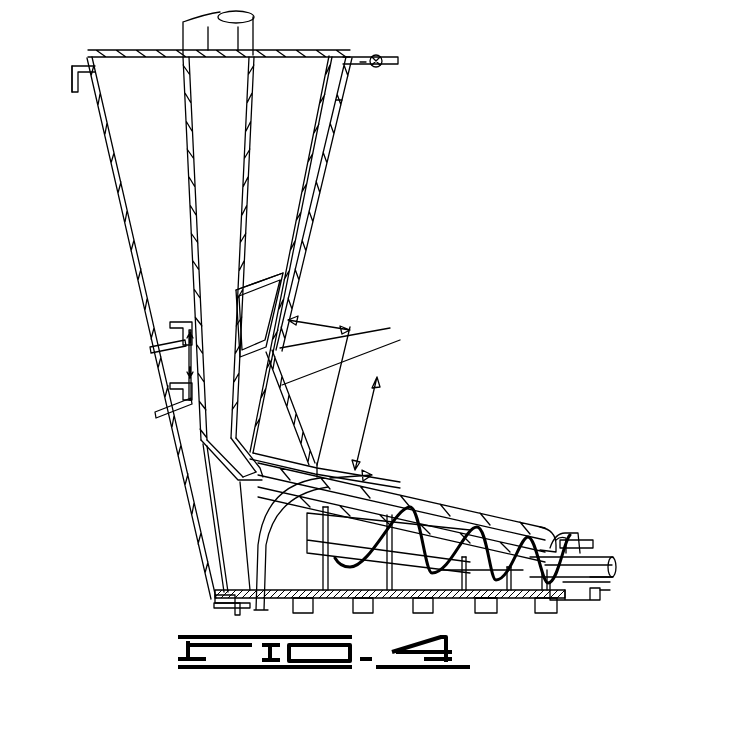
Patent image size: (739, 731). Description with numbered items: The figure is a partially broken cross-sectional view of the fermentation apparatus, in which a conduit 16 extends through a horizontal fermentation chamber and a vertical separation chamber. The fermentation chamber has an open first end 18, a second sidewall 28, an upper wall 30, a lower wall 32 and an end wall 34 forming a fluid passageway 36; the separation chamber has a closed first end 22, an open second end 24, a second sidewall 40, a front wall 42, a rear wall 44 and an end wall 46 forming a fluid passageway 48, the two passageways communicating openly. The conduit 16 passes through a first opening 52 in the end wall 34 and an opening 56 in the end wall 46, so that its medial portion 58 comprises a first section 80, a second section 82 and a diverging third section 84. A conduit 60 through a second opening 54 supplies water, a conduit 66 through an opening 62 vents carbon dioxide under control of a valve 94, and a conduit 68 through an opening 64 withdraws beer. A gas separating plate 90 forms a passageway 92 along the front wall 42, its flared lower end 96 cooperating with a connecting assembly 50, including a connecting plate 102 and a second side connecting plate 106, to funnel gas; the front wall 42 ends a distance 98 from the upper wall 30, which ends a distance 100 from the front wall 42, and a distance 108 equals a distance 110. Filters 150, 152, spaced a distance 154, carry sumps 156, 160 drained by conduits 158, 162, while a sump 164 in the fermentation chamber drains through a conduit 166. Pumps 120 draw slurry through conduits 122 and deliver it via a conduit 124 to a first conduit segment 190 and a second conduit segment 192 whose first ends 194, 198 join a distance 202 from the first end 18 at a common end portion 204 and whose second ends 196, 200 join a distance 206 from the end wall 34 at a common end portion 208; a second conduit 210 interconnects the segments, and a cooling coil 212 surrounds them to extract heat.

The conduit 16 is at (630, 555).
The open first end 18 is at (240, 565).
The closed upper or first end 22 is at (310, 60).
The open lower or second end 24 is at (212, 520).
The second sidewall 28 is at (268, 565).
The upper wall 30 is at (570, 505).
The lower wall 32 is at (237, 614).
The end wall 34 is at (585, 540).
The fluid passageway 36 is at (475, 515).
The second sidewall 40 is at (139, 135).
The front wall 42 is at (318, 188).
The rear wall 44 is at (108, 155).
The end wall 46 is at (290, 45).
The fluid passageway 48 is at (140, 192).
The connecting assembly 50 is at (400, 352).
The first opening 52 is at (595, 542).
The second opening 54 is at (580, 592).
The opening 56 is at (250, 48).
The medial portion 58 is at (320, 473).
The conduit 60 is at (605, 597).
The opening 62 is at (353, 66).
The opening 64 is at (96, 68).
The conduit 66 is at (372, 58).
The conduit 68 is at (72, 78).
The first section 80 is at (395, 485).
The second section 82 is at (257, 483).
The third section 84 is at (256, 110).
The gas separating plate 90 is at (320, 140).
The passageway 92 is at (320, 165).
The valve 94 is at (384, 58).
The lower end 96 is at (345, 345).
The distance 98 is at (370, 420).
The distance 100 is at (320, 322).
The connecting plate 102 is at (295, 400).
The second side connecting plate 106 is at (379, 378).
The distance 108 is at (215, 448).
The distance 110 is at (360, 478).
The pumps 120 is at (497, 618).
The conduit 122 is at (295, 600).
The conduit 124 is at (330, 578).
The filter 150 is at (270, 312).
The filter 152 is at (258, 283).
The distance 154 is at (180, 352).
The sump 156 is at (170, 325).
The conduit 158 is at (150, 350).
The sump 160 is at (155, 414).
The conduit 162 is at (185, 423).
The sump 164 is at (225, 596).
The conduit 166 is at (222, 605).
The first conduit segment 190 is at (450, 505).
The second conduit segment 192 is at (464, 560).
The first end 194 is at (360, 470).
The second end 196 is at (595, 520).
The first end 198 is at (238, 572).
The second end 200 is at (520, 567).
The distance 202 is at (240, 570).
The common end portion 204 is at (283, 462).
The distance 206 is at (553, 525).
The common end portion 208 is at (612, 575).
The second conduit 210 is at (330, 525).
The cooling coil 212 is at (540, 505).